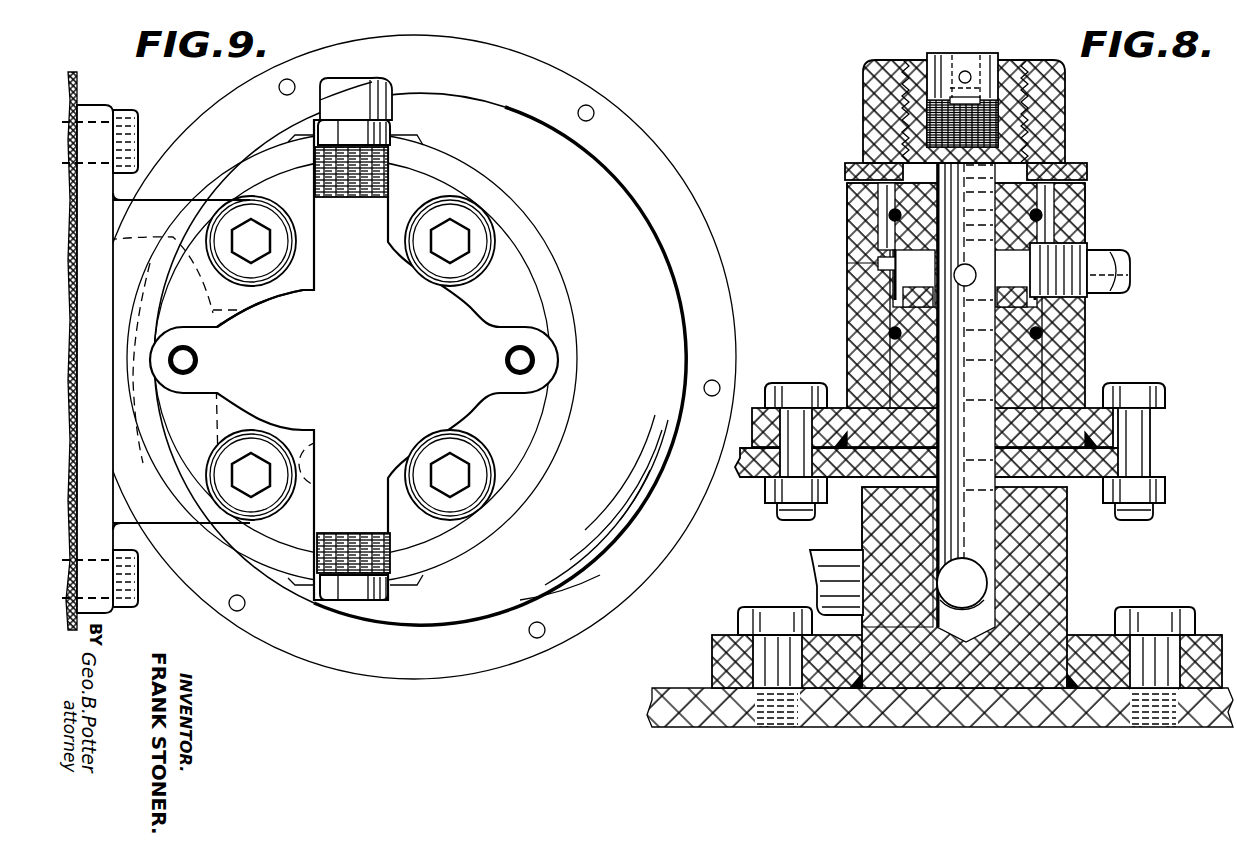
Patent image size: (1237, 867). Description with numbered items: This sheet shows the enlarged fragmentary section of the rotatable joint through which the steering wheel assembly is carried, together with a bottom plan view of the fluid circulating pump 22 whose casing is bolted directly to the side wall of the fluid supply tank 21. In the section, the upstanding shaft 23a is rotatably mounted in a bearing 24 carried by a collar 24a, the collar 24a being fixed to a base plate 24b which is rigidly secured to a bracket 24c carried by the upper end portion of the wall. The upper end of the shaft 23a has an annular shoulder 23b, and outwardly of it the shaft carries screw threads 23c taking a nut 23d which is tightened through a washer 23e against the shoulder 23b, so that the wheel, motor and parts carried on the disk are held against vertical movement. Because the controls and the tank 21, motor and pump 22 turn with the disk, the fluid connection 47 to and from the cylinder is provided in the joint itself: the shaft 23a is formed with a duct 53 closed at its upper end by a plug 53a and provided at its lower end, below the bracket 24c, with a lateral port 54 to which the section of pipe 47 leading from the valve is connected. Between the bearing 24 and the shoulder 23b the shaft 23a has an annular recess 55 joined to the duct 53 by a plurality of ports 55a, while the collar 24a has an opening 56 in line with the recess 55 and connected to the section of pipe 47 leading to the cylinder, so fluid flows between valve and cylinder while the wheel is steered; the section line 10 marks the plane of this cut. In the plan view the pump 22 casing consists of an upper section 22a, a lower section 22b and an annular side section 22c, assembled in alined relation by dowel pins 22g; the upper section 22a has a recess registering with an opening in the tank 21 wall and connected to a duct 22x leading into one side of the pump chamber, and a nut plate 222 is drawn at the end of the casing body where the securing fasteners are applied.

In FIG. 9, the section line 10 is at (140, 360).
In FIG. 9, the fluid supply tank 21 is at (77, 83).
In FIG. 8, the fluid supply tank 21 is at (707, 720).
In FIG. 9, the fluid circulating pump 22 is at (458, 399).
In FIG. 9, the upper casing section 22a is at (596, 498).
In FIG. 9, the lower casing section 22b is at (527, 433).
In FIG. 9, the annular side section 22c is at (568, 395).
In FIG. 9, the dowel pins 22g is at (519, 366).
In FIG. 9, the duct 22x is at (278, 360).
In FIG. 9, the nut plate 222 is at (392, 120).
In FIG. 8, the upstanding shaft 23a is at (1053, 540).
In FIG. 8, the annular shoulder 23b is at (1072, 198).
In FIG. 8, the screw threads 23c is at (907, 108).
In FIG. 8, the nut 23d is at (1053, 127).
In FIG. 8, the washer 23e is at (1072, 172).
In FIG. 8, the bearing 24 is at (1050, 378).
In FIG. 8, the collar 24a is at (1077, 337).
In FIG. 8, the base plate 24b is at (1165, 442).
In FIG. 8, the bracket 24c is at (1163, 482).
In FIG. 8, the fluid connection pipe 47 is at (1129, 285).
In FIG. 8, the duct 53 is at (933, 530).
In FIG. 8, the plug 53a is at (980, 103).
In FIG. 8, the lateral port 54 is at (973, 556).
In FIG. 8, the annular recess 55 is at (895, 277).
In FIG. 8, the ports 55a is at (980, 260).
In FIG. 8, the opening 56 is at (1072, 241).